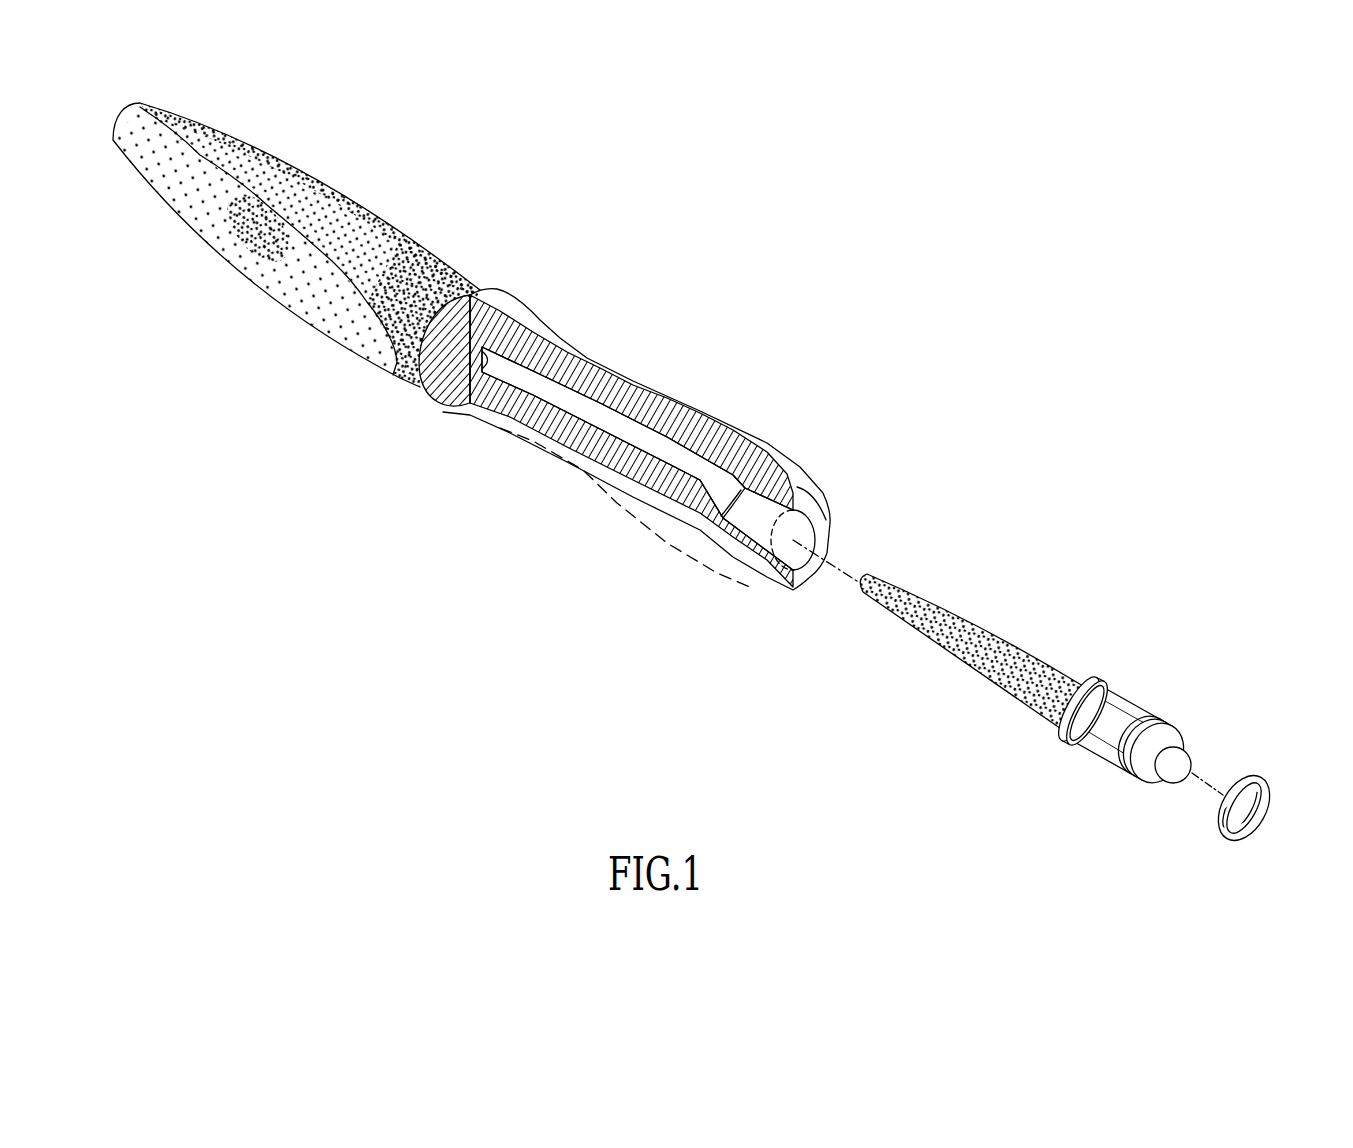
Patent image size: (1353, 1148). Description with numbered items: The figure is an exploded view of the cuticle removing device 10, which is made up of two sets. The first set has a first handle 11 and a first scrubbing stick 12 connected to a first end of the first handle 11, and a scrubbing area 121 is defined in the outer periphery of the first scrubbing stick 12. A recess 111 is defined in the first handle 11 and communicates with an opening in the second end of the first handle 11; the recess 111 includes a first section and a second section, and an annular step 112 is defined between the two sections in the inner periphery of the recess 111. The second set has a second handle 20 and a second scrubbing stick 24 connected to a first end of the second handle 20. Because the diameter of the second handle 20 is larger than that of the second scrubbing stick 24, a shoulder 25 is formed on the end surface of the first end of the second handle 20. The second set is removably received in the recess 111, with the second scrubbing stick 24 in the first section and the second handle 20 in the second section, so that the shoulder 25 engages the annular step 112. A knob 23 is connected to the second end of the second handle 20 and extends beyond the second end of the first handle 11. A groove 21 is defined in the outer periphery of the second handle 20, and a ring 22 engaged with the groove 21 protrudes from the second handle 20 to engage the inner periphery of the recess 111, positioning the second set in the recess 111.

The cuticle removing device 10 is at (375, 490).
The first handle 11 is at (563, 353).
The recess 111 is at (657, 457).
The annular step 112 is at (730, 537).
The first scrubbing stick 12 is at (363, 207).
The scrubbing area 121 is at (303, 290).
The second handle 20 is at (1137, 707).
The groove 21 is at (1120, 770).
The ring 22 is at (1220, 817).
The knob 23 is at (1183, 758).
The second scrubbing stick 24 is at (1000, 643).
The shoulder 25 is at (1080, 687).